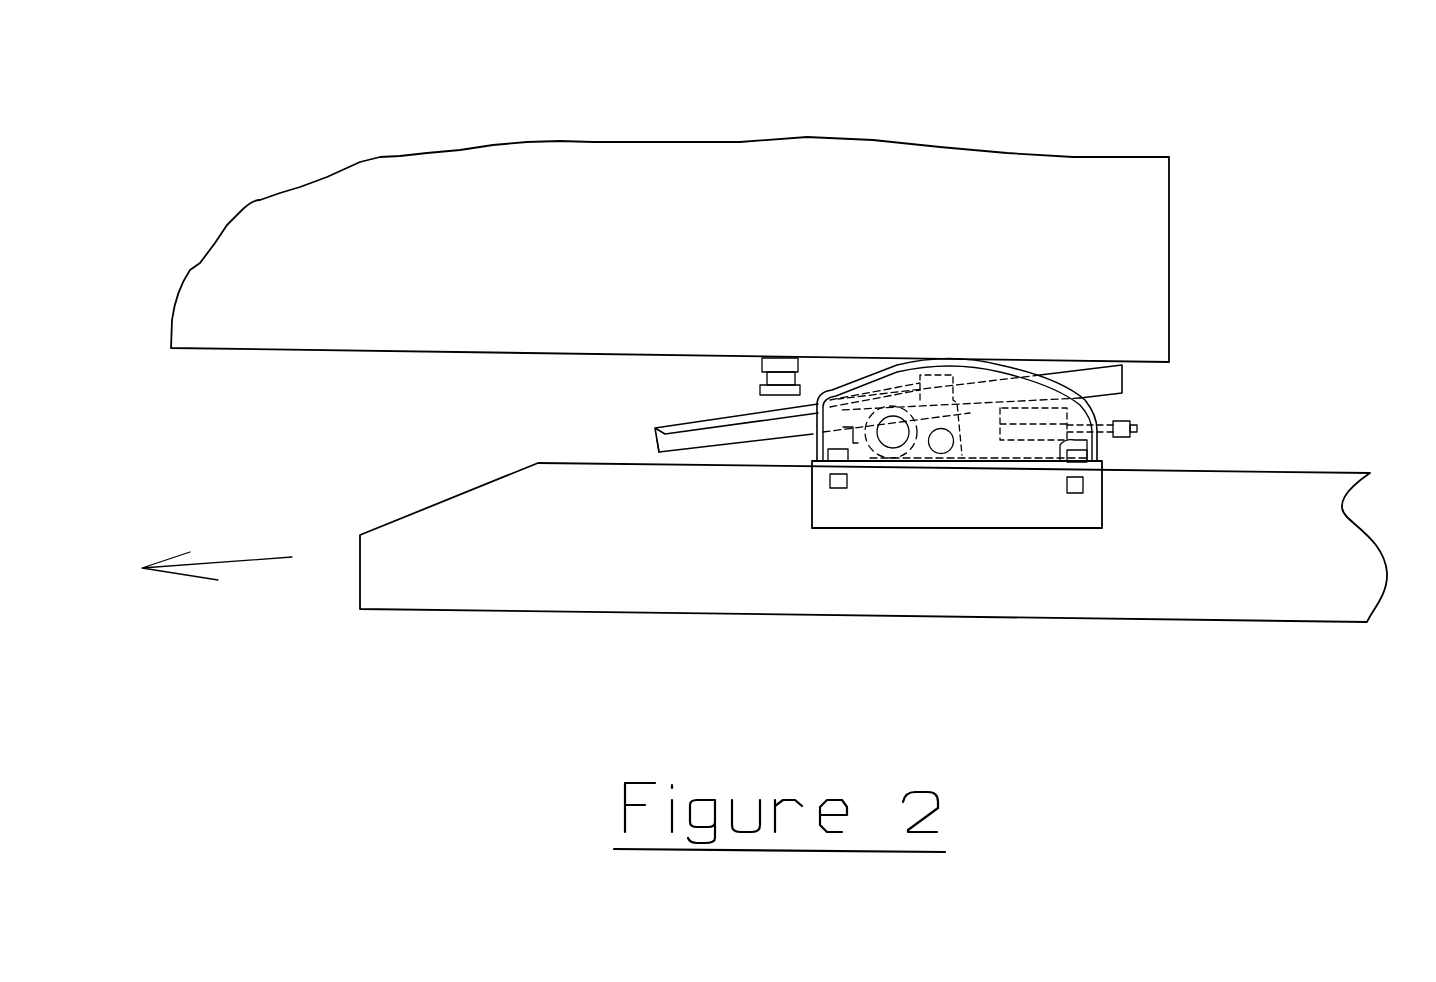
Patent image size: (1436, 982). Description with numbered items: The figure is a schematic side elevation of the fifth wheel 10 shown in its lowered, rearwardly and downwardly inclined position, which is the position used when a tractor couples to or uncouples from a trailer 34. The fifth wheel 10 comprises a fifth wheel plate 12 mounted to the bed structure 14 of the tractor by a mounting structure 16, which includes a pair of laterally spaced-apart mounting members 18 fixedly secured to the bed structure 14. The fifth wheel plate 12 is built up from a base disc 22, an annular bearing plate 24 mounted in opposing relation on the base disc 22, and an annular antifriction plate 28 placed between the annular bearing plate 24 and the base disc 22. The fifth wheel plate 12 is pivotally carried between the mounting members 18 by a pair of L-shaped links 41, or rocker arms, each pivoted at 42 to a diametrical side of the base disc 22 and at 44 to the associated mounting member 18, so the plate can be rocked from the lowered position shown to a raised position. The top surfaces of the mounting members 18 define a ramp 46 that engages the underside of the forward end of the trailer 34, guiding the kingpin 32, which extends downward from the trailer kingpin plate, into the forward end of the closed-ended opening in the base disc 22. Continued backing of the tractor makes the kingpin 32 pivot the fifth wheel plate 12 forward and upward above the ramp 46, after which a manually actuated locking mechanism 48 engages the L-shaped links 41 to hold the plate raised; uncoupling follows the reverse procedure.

The fifth wheel 10 is at (1288, 372).
The fifth wheel plate 12 is at (1148, 375).
The bed structure 14 is at (527, 590).
The mounting structure 16 is at (1125, 536).
The mounting members 18 is at (1000, 447).
The base disc 22 is at (667, 458).
The annular bearing plate 24 is at (668, 427).
The annular antifriction plate 28 is at (676, 443).
The kingpin 32 is at (750, 393).
The trailer 34 is at (1178, 214).
The L-shaped links 41 is at (970, 460).
The pivot 42 is at (897, 433).
The pivot 44 is at (943, 440).
The ramp 46 is at (895, 375).
The locking mechanism 48 is at (1036, 452).